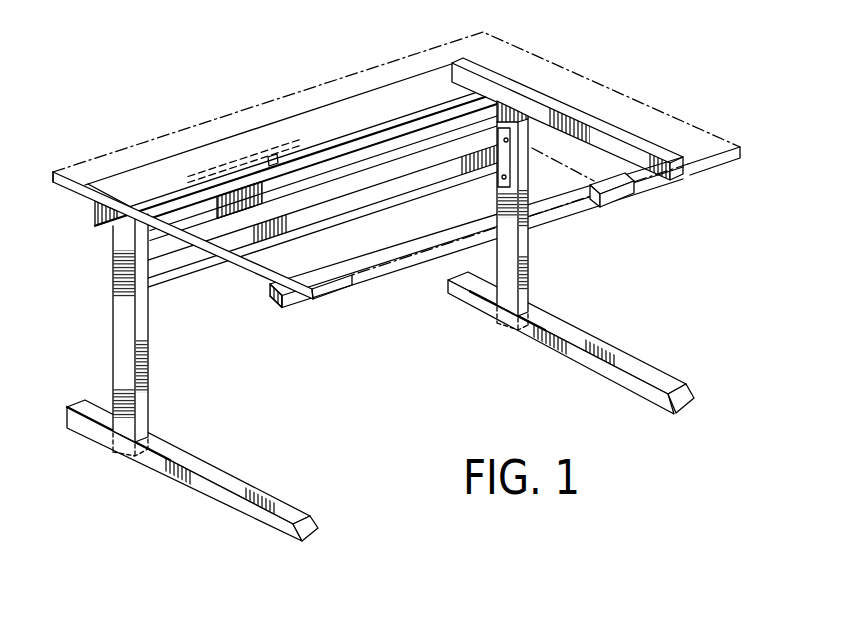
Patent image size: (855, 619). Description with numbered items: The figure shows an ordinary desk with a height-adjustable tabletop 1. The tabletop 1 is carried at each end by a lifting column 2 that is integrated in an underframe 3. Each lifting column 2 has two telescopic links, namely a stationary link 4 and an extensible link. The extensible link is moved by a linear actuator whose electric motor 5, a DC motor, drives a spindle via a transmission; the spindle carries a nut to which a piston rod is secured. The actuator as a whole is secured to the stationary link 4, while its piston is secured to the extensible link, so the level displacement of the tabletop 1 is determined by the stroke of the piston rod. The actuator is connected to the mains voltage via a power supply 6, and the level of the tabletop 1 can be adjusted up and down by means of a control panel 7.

The tabletop 1 is at (546, 59).
The lifting column 2 is at (112, 347).
The underframe 3 is at (160, 288).
The stationary link 4 is at (147, 396).
The electric motor 5 is at (155, 203).
The power supply 6 is at (305, 152).
The control panel 7 is at (623, 190).